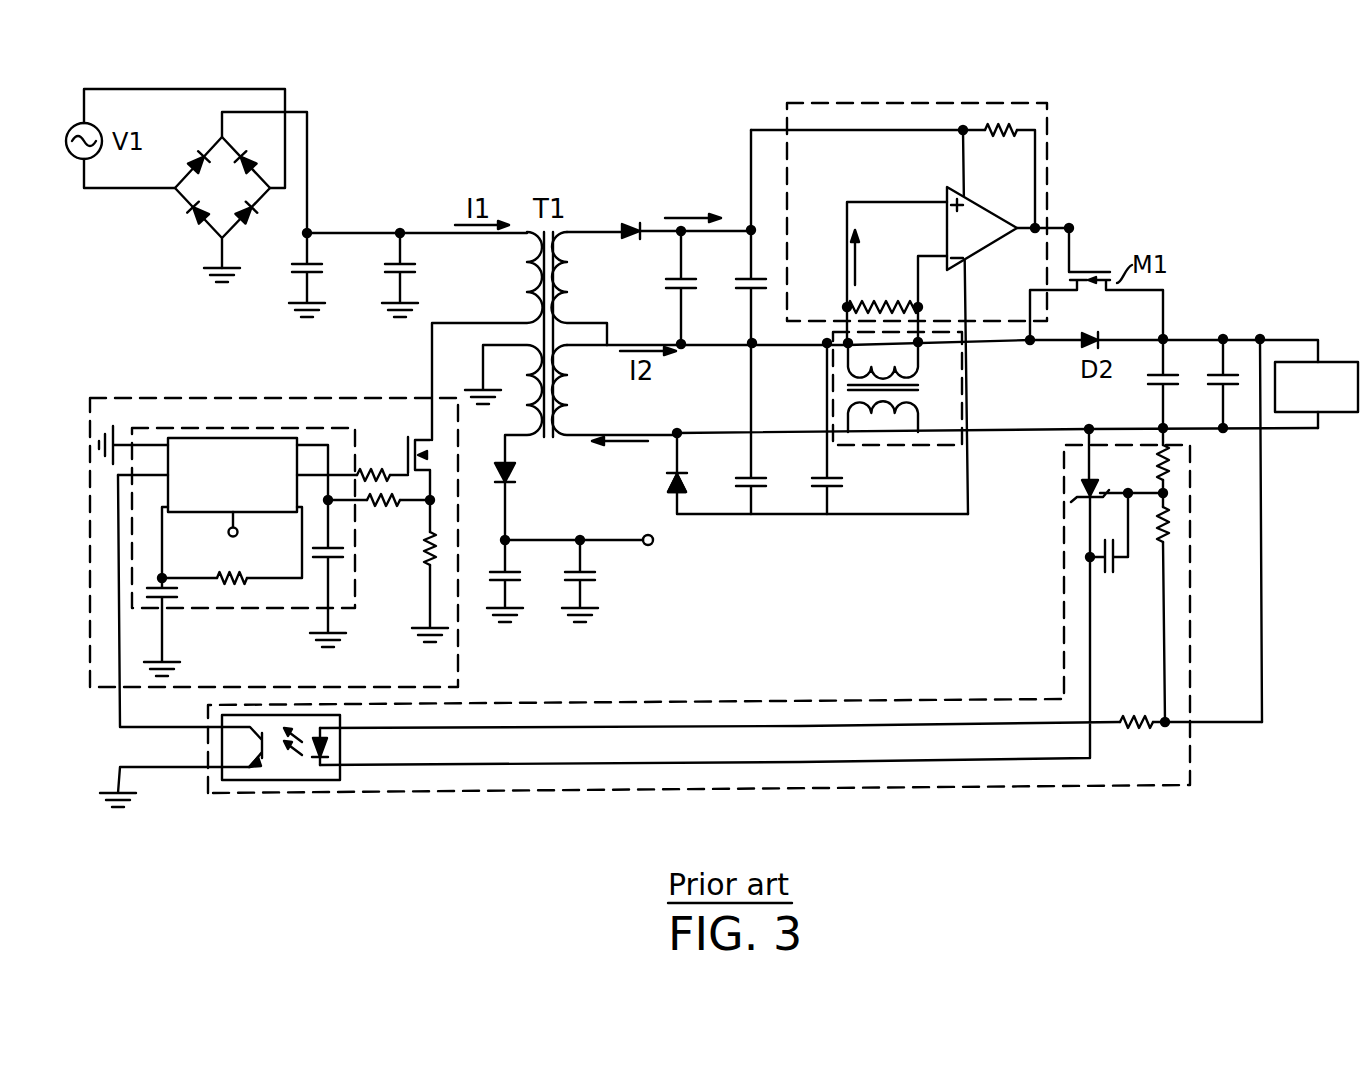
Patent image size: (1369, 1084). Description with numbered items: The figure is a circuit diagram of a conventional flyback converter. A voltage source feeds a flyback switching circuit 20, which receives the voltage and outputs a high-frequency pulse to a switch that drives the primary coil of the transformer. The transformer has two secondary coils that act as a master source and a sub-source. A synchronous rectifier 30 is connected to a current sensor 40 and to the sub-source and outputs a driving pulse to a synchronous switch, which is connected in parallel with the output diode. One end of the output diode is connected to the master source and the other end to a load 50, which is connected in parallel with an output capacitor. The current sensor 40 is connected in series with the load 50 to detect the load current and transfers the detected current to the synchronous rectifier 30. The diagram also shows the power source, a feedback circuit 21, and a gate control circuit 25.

The flyback switching circuit 20 is at (408, 460).
The feedback circuit 21 is at (870, 702).
The gate control circuit 25 is at (332, 430).
The synchronous rectifier 30 is at (1000, 103).
The current sensor 40 is at (873, 443).
The load 50 is at (1348, 362).